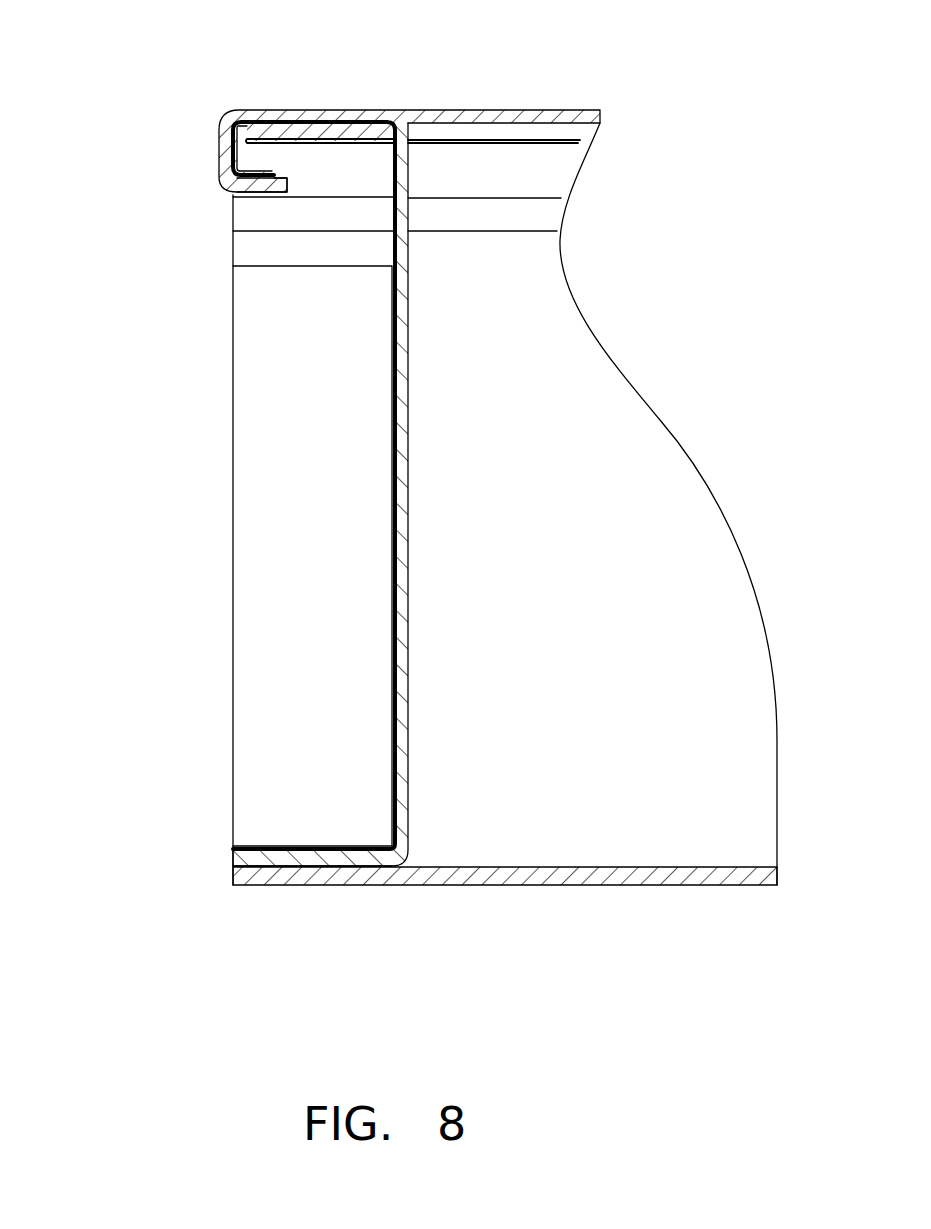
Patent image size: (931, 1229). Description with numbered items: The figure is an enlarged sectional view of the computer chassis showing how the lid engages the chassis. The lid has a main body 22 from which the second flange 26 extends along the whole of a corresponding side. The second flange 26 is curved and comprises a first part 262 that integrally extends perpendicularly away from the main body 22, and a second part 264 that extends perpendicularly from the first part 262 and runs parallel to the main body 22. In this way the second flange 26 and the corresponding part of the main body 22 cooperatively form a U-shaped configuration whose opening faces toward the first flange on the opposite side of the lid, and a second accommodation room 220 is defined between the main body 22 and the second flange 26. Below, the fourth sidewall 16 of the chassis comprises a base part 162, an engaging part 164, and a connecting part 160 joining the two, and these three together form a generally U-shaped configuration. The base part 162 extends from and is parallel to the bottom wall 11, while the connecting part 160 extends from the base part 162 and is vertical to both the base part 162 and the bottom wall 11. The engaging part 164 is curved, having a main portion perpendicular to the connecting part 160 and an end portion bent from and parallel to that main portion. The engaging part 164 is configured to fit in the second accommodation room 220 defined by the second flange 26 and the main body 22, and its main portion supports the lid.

The bottom wall 11 is at (485, 873).
The fourth sidewall 16 is at (106, 260).
The connecting part 160 is at (402, 413).
The base part 162 is at (345, 857).
The engaging part 164 is at (338, 143).
The main body 22 is at (347, 120).
The second accommodation room 220 is at (275, 160).
The second flange 26 is at (136, 127).
The first part 262 is at (223, 147).
The second part 264 is at (262, 185).